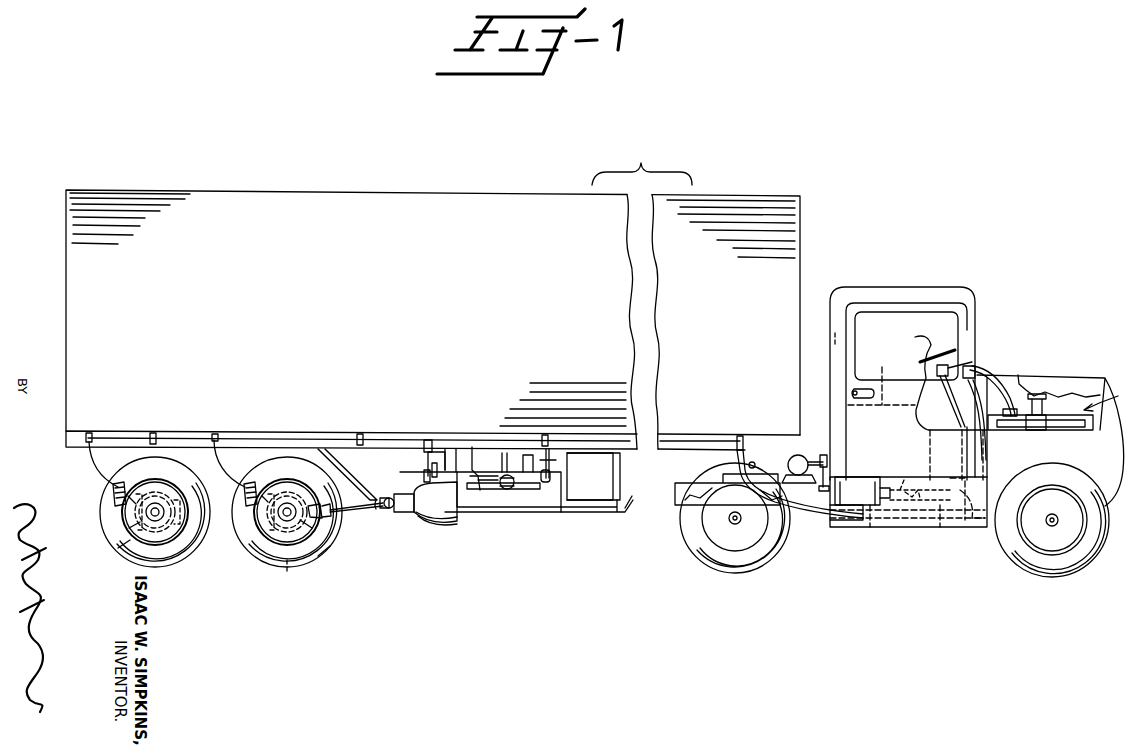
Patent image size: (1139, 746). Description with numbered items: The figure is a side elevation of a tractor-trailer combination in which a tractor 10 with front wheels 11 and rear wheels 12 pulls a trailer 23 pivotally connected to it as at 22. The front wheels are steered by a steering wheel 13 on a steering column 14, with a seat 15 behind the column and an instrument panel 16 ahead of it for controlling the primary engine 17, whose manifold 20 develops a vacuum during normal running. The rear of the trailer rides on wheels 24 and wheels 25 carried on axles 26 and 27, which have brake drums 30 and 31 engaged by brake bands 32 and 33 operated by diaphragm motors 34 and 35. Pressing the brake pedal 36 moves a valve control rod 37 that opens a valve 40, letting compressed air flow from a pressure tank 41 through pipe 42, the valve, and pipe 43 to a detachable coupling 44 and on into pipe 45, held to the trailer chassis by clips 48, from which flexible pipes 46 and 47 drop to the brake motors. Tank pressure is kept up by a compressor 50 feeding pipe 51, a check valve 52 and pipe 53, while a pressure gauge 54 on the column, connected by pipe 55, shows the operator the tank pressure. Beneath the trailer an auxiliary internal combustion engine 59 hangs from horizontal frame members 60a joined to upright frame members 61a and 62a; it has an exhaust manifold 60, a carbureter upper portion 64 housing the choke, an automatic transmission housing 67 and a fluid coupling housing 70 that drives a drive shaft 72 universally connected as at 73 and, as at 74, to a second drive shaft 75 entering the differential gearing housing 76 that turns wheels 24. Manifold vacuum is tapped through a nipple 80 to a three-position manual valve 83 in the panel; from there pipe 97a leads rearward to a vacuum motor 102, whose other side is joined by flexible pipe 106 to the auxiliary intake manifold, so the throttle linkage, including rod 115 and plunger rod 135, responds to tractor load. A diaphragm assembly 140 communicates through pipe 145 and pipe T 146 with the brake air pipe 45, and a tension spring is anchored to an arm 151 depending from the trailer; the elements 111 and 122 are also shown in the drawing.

The tractor 10 is at (1067, 375).
The front wheels 11 is at (1100, 554).
The rear wheels 12 is at (776, 552).
The steering wheel 13 is at (918, 340).
The steering column 14 is at (955, 350).
The seat 15 is at (882, 388).
The instrument panel 16 is at (946, 396).
The primary engine 17 is at (1111, 401).
The manifold 20 is at (1050, 430).
The pivotal connection 22 is at (756, 462).
The trailer 23 is at (490, 194).
The wheels 24 is at (338, 522).
The wheels 25 is at (186, 563).
The axle 26 is at (310, 555).
The axle 27 is at (128, 530).
The brake drum 30 is at (291, 575).
The brake drum 31 is at (130, 550).
The brake band 32 is at (262, 518).
The brake band 33 is at (122, 510).
The diaphragm motor 34 is at (262, 481).
The diaphragm motor 35 is at (130, 480).
The brake pedal 36 is at (960, 474).
The valve control rod 37 is at (987, 508).
The valve 40 is at (912, 490).
The pressure tank 41 is at (858, 476).
The pipe 42 is at (892, 530).
The pipe 43 is at (947, 530).
The detachable coupling 44 is at (740, 436).
The pipe 45 is at (283, 442).
The flexible pipe 46 is at (222, 478).
The flexible pipe 47 is at (100, 468).
The clips 48 is at (544, 434).
The compressor 50 is at (802, 456).
The pipe 51 is at (826, 440).
The check valve 52 is at (828, 458).
The pipe 53 is at (828, 490).
The pressure gauge 54 is at (976, 360).
The pipe 55 is at (975, 420).
The auxiliary internal combustion engine 59 is at (510, 514).
The exhaust manifold 60 is at (455, 498).
The horizontal frame members 60a is at (578, 514).
The upwardly extending frame member 61a is at (620, 474).
The upwardly extending frame member 62a is at (345, 476).
The tubular upper portion 64 is at (515, 463).
The automatic transmission housing 67 is at (440, 524).
The fluid coupling housing 70 is at (408, 514).
The drive shaft 72 is at (380, 497).
The universal connection 73 is at (389, 512).
The universal connection 74 is at (345, 520).
The second drive shaft 75 is at (318, 498).
The differential gearing housing 76 is at (318, 532).
The nipple 80 is at (1006, 430).
The three-position manually operable valve 83 is at (1000, 370).
The pipe 97a is at (748, 447).
The vacuum motor 102 is at (552, 478).
The flexible pipe 106 is at (514, 488).
The connecting pipe 111 is at (557, 462).
The rod 115 is at (498, 475).
The base plate 122 is at (484, 490).
The plunger rod 135 is at (470, 456).
The diaphragm assembly 140 is at (424, 478).
The pipe 145 is at (430, 466).
The pipe T 146 is at (428, 440).
The arm 151 is at (449, 449).